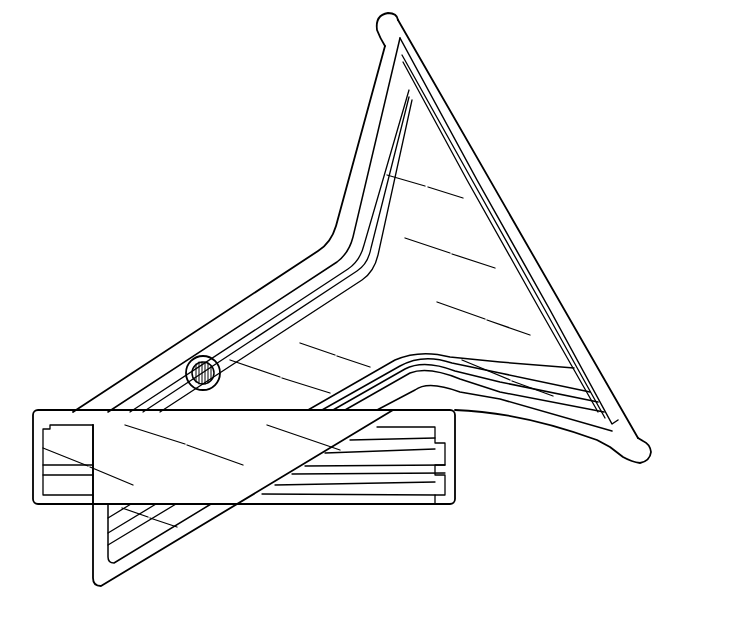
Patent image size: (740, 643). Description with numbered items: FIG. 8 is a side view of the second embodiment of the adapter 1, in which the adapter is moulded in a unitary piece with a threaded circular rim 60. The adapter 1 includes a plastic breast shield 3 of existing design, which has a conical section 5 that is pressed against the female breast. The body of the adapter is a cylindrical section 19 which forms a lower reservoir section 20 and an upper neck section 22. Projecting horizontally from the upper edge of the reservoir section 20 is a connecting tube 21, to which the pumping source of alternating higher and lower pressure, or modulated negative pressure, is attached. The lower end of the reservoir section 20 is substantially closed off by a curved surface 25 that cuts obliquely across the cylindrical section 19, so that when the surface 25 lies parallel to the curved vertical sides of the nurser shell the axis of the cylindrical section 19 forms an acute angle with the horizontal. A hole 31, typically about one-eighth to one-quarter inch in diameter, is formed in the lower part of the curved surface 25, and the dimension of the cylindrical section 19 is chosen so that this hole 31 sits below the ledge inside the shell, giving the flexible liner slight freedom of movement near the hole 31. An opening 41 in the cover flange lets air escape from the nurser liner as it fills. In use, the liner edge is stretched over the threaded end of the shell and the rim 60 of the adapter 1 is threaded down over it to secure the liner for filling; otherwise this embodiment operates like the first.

The adapter 1 is at (214, 295).
The breast shield 3 is at (482, 163).
The conical section 5 is at (352, 157).
The cylindrical section 19 is at (207, 527).
The lower reservoir section 20 is at (138, 528).
The connecting tube 21 is at (200, 355).
The upper neck section 22 is at (290, 297).
The curved surface 25 is at (112, 515).
The hole 31 is at (95, 553).
The opening 41 is at (393, 400).
The threaded circular rim 60 is at (457, 465).